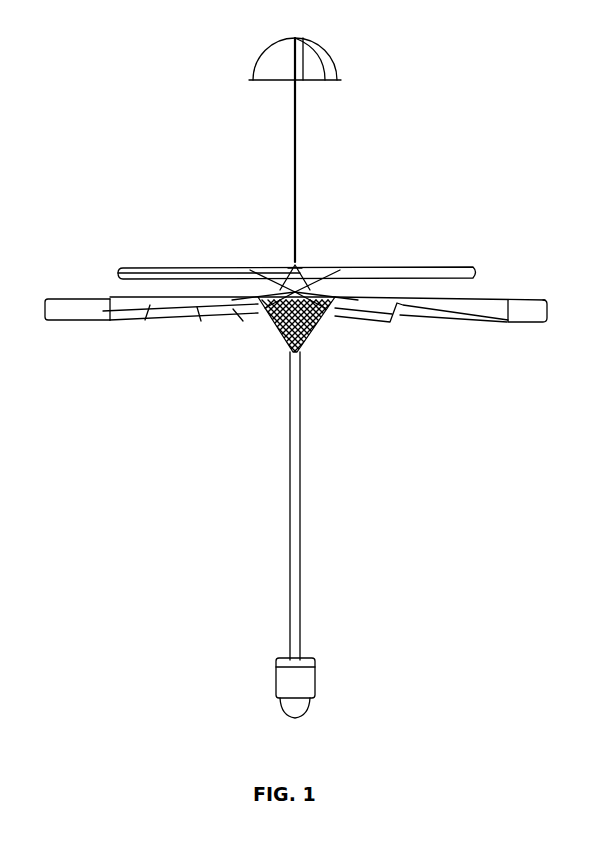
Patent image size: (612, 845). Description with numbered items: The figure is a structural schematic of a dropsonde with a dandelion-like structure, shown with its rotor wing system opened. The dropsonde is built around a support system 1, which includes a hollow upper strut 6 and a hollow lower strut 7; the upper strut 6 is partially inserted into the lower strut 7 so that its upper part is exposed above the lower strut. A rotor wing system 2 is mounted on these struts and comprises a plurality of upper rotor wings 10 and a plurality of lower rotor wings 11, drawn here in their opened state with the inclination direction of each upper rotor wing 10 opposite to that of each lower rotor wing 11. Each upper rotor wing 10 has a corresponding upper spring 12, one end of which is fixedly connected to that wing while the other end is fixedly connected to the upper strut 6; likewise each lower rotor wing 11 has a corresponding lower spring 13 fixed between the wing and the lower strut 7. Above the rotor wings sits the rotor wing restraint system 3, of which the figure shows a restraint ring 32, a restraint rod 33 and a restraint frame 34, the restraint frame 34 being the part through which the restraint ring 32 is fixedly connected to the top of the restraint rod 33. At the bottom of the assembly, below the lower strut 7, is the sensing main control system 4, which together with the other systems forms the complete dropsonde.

The support system 1 is at (415, 198).
The rotor wing system 2 is at (237, 402).
The rotor wing restraint system 3 is at (392, 15).
The sensing main control system 4 is at (303, 705).
The upper strut 6 is at (293, 262).
The lower strut 7 is at (330, 267).
The upper rotor wing 10 is at (126, 268).
The lower rotor wing 11 is at (147, 307).
The upper spring 12 is at (278, 308).
The lower spring 13 is at (277, 340).
The restraint ring 32 is at (318, 80).
The restraint rod 33 is at (298, 117).
The restraint frame 34 is at (322, 52).